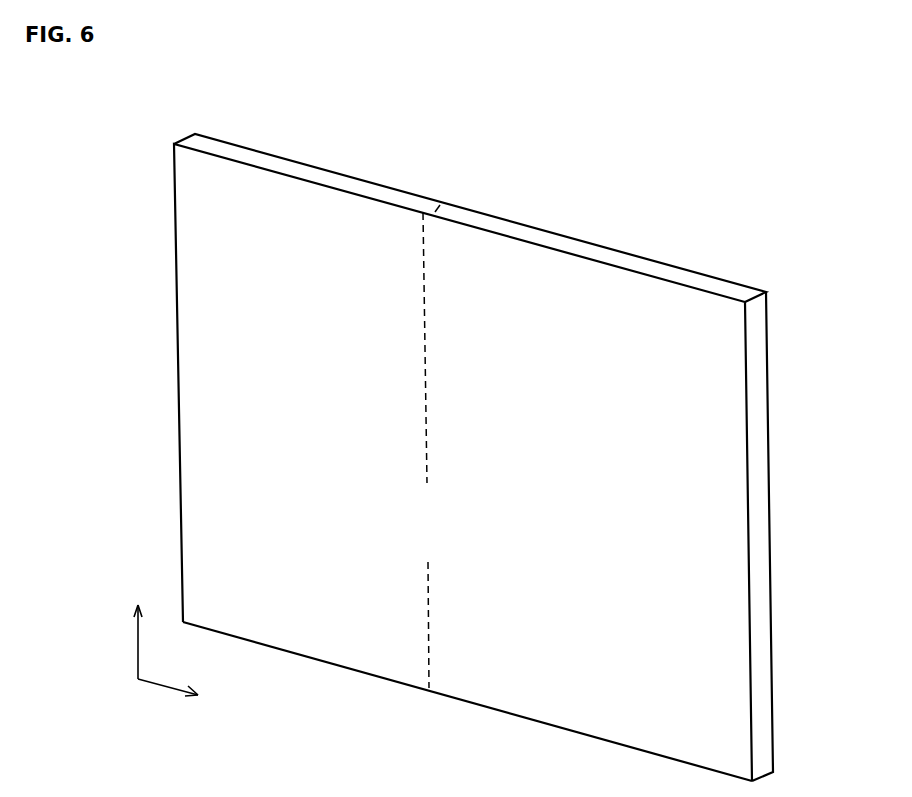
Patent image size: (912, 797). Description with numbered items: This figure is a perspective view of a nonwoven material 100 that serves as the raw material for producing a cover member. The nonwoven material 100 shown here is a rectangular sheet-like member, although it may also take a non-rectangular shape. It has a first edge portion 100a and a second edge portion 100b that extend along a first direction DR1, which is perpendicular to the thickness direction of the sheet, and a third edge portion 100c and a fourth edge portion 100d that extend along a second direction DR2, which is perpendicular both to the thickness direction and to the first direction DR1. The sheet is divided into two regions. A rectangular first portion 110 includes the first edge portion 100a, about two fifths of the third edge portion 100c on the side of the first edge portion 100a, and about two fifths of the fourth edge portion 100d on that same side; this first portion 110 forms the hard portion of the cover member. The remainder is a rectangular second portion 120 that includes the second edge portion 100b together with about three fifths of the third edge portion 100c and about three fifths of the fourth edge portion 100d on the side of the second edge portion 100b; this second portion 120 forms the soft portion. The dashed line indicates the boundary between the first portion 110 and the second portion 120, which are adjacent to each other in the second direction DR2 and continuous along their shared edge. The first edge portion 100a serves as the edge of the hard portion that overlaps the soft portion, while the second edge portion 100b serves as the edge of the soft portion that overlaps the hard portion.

The nonwoven material 100 is at (505, 137).
The first edge portion 100a is at (207, 393).
The second edge portion 100b is at (722, 542).
The third edge portion 100c is at (388, 235).
The fourth edge portion 100d is at (383, 658).
The first portion 110 is at (283, 203).
The second portion 120 is at (585, 288).
The first direction DR1 is at (138, 643).
The second direction DR2 is at (167, 688).